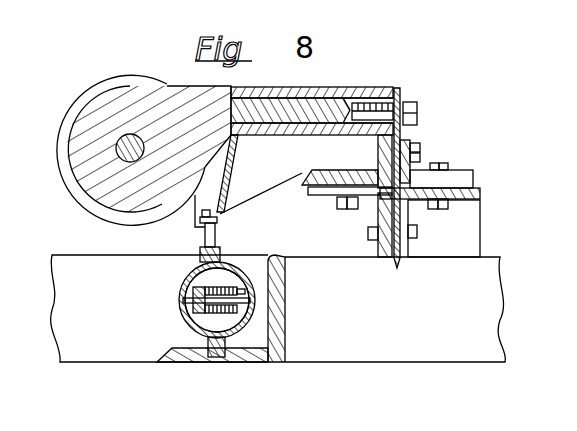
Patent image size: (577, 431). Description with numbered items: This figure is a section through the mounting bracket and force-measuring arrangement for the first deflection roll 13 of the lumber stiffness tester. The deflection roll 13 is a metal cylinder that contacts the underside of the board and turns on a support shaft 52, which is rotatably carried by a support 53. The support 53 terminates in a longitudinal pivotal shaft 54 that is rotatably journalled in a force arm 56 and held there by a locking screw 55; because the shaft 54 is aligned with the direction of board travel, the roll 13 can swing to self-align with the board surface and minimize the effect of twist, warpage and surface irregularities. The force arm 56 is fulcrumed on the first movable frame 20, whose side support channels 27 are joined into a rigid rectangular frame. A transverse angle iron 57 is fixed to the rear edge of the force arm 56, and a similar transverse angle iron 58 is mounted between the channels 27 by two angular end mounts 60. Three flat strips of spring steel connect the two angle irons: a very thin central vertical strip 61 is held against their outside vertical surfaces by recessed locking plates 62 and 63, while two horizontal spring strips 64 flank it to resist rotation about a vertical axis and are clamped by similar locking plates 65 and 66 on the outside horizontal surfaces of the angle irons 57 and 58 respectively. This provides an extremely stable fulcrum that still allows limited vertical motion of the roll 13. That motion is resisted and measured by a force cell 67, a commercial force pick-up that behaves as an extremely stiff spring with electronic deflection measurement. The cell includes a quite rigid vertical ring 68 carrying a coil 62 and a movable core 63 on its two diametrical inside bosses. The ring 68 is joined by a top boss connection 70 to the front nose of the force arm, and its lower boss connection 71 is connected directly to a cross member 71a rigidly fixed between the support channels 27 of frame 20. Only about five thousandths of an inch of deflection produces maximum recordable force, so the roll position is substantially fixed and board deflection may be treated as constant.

The first deflection roll 13 is at (62, 119).
The first movable frame 20 is at (511, 267).
The side support channels 27 is at (406, 362).
The support shaft 52 is at (131, 140).
The support 53 is at (198, 88).
The longitudinal pivotal shaft 54 is at (348, 112).
The locking screw 55 is at (418, 107).
The force arm 56 is at (335, 91).
The transverse angle iron 57 is at (354, 175).
The transverse angle iron 58 is at (481, 193).
The angular end mounts 60 is at (462, 241).
The central vertical strip 61 is at (406, 152).
The locking plate 62 is at (421, 156).
The locking plate 63 is at (378, 222).
The horizontal spring strips 64 is at (474, 182).
The locking plate 65 is at (470, 177).
The locking plate 66 is at (323, 196).
The force cell 67 is at (175, 294).
The vertical ring 68 is at (185, 322).
The top boss connection 70 is at (216, 237).
The lower boss connection 71 is at (228, 346).
The cross member 71a is at (282, 336).